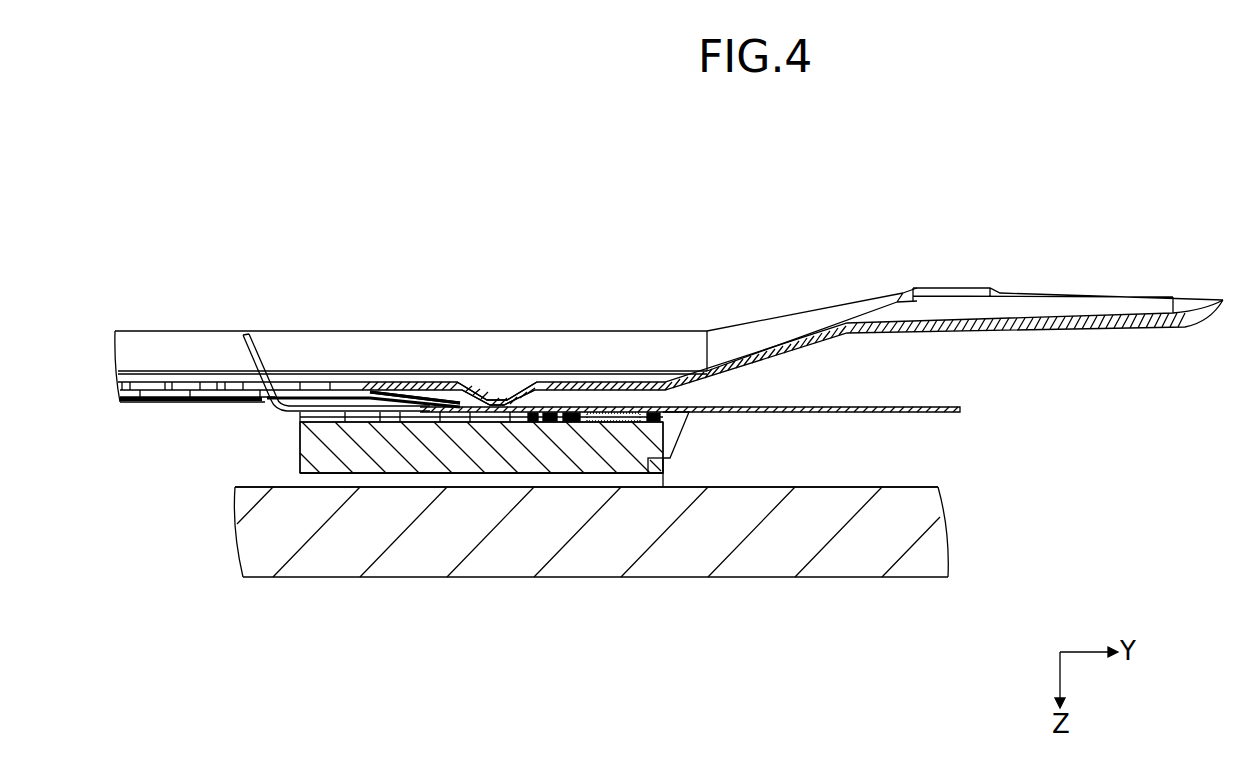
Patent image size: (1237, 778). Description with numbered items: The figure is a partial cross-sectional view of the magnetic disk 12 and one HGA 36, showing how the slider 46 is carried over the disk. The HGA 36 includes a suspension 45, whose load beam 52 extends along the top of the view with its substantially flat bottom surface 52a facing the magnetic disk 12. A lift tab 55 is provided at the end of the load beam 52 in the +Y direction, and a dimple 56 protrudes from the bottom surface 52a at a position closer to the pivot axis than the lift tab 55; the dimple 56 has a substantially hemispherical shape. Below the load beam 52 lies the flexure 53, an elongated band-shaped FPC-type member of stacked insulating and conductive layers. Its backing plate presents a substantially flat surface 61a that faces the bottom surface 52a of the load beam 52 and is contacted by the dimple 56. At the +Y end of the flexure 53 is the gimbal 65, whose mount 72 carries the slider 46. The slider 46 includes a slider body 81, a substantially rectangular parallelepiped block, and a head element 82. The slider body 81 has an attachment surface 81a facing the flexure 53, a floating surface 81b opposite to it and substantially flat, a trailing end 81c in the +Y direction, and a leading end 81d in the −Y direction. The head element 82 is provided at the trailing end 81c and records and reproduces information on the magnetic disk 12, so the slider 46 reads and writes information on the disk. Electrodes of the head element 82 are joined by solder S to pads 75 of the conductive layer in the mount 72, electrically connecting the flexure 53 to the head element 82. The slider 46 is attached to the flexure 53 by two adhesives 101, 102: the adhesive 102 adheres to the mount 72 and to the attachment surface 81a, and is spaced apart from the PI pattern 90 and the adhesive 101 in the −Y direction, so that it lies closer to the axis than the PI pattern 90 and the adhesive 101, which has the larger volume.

The HGA 36 is at (178, 173).
The suspension 45 is at (739, 310).
The lift tab 55 is at (1140, 335).
The load beam 52 is at (806, 343).
The bottom surface 52a is at (468, 405).
The adhesive 102 is at (430, 405).
The gimbal 65 is at (349, 418).
The mount 72 is at (415, 397).
The flexure 53 is at (960, 414).
The adhesive 101 is at (629, 412).
The surface 61a is at (584, 407).
The PI pattern 90 is at (661, 410).
The dimple 56 is at (552, 420).
The slider body 81 is at (373, 460).
The attachment surface 81a is at (497, 418).
The floating surface 81b is at (586, 440).
The trailing end 81c is at (657, 470).
The leading end 81d is at (300, 440).
The head element 82 is at (645, 475).
The pad 75 is at (684, 432).
The solder S is at (672, 445).
The magnetic disk 12 is at (512, 565).
The slider 46 is at (408, 477).